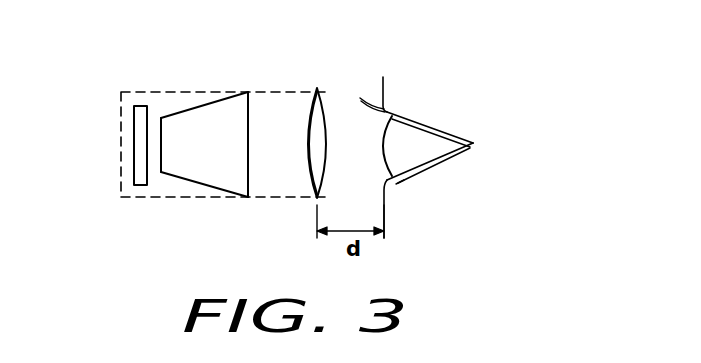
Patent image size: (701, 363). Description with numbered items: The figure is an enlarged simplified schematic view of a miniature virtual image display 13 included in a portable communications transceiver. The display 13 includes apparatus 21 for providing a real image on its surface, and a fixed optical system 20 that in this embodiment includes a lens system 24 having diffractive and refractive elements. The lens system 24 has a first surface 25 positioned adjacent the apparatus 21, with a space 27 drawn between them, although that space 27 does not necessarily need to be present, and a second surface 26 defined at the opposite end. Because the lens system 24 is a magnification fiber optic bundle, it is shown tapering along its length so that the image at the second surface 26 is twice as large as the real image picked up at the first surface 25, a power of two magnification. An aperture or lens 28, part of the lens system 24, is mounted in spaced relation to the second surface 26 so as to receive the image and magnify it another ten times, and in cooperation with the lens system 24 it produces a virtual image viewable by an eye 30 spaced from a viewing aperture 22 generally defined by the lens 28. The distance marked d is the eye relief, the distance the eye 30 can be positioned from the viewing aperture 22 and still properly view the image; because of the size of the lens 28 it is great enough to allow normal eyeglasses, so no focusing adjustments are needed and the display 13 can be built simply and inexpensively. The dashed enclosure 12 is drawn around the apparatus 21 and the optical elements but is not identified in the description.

The display module housing 12 is at (168, 70).
The miniature virtual image display 13 is at (325, 67).
The fixed optical system 20 is at (286, 91).
The apparatus for providing a real image 21 is at (142, 186).
The viewing aperture 22 is at (368, 159).
The lens system 24 is at (232, 193).
The first surface 25 is at (162, 150).
The second surface 26 is at (249, 178).
The space 27 is at (150, 133).
The lens 28 is at (311, 143).
The eye 30 is at (463, 193).